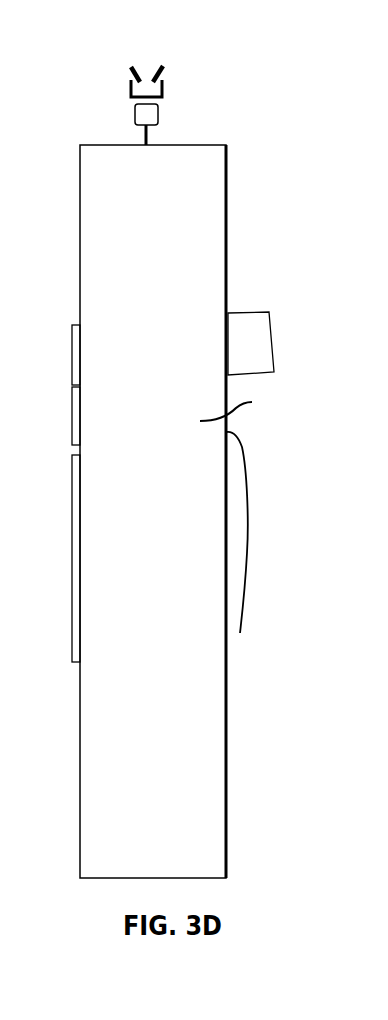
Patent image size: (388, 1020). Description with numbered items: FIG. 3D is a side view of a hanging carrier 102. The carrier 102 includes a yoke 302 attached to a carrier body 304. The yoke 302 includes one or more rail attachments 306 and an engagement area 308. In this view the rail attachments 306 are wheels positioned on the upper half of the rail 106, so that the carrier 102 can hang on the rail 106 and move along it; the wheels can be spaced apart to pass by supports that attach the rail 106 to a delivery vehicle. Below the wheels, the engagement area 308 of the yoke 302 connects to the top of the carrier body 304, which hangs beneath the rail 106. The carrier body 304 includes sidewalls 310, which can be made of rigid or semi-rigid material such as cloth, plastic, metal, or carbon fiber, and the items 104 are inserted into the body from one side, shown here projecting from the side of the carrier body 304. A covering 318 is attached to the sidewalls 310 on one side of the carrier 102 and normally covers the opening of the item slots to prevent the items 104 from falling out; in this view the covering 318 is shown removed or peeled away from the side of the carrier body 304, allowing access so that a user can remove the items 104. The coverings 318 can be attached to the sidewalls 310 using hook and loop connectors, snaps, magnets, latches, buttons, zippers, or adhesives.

The carrier 102 is at (85, 80).
The yoke 302 is at (110, 117).
The carrier body 304 is at (248, 236).
The rail attachments 306 is at (170, 58).
The rail 106 is at (160, 88).
The engagement area 308 is at (160, 117).
The items 104 is at (250, 339).
The sidewalls 310 is at (245, 406).
The coverings 318 is at (250, 527).